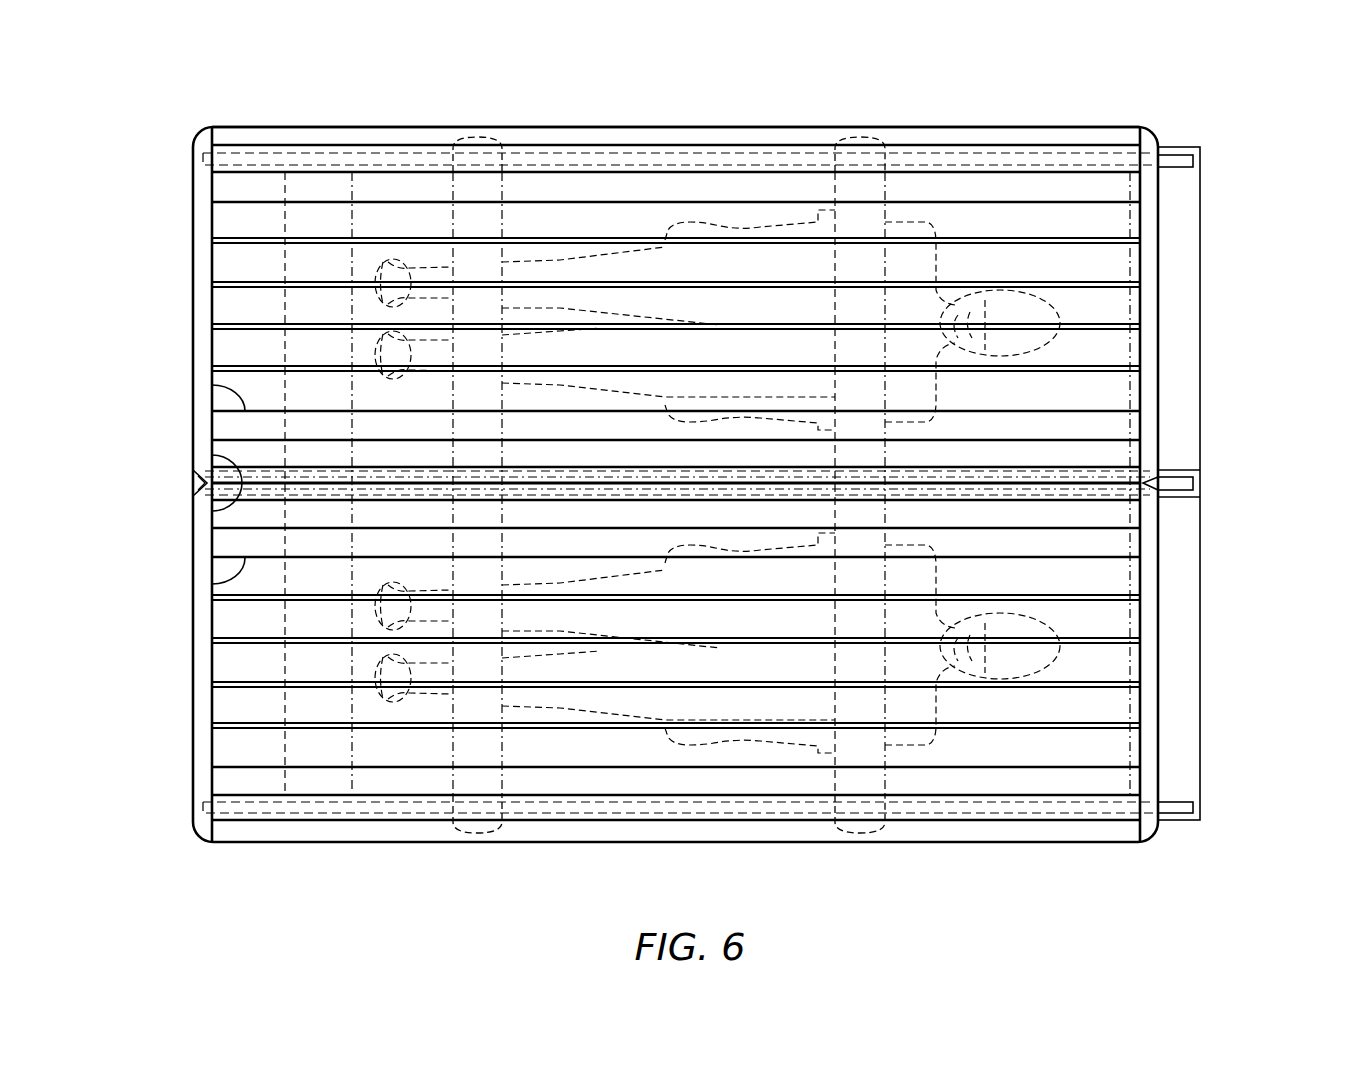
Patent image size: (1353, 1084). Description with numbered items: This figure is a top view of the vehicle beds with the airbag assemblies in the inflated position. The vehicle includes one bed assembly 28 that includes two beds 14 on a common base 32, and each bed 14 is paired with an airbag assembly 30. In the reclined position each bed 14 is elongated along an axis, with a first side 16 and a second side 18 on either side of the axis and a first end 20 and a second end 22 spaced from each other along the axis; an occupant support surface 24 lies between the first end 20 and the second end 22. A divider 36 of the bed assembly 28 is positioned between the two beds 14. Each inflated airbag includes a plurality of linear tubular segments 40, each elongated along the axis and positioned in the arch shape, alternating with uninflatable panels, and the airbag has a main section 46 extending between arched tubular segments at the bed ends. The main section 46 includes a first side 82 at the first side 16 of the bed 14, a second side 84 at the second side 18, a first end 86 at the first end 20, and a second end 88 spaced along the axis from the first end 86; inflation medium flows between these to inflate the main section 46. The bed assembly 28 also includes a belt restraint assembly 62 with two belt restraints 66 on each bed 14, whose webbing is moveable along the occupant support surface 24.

The vehicle bed 14 is at (1229, 483).
The first side 16 is at (1184, 148).
The second side 18 is at (1183, 470).
The first end 20 is at (195, 332).
The second end 22 is at (1200, 333).
The occupant support surface 24 is at (1098, 218).
The bed assembly 28 is at (1249, 483).
The airbag assembly 30 is at (1052, 115).
The base 32 is at (1200, 797).
The divider 36 is at (1200, 483).
The linear tubular segments 40 is at (152, 486).
The main section 46 is at (215, 386).
The belt restraint assembly 62 is at (472, 98).
The belt restraints 66 is at (506, 190).
The first side of the main section 82 is at (314, 126).
The second side of the main section 84 is at (225, 470).
The first end of the main section 86 is at (210, 256).
The second end of the main section 88 is at (1140, 422).